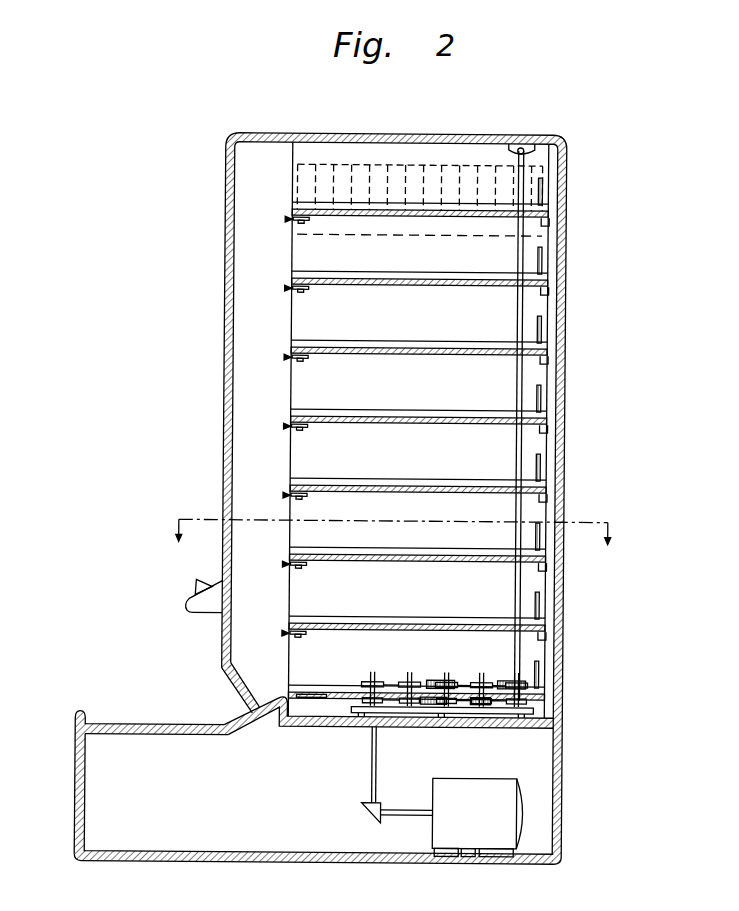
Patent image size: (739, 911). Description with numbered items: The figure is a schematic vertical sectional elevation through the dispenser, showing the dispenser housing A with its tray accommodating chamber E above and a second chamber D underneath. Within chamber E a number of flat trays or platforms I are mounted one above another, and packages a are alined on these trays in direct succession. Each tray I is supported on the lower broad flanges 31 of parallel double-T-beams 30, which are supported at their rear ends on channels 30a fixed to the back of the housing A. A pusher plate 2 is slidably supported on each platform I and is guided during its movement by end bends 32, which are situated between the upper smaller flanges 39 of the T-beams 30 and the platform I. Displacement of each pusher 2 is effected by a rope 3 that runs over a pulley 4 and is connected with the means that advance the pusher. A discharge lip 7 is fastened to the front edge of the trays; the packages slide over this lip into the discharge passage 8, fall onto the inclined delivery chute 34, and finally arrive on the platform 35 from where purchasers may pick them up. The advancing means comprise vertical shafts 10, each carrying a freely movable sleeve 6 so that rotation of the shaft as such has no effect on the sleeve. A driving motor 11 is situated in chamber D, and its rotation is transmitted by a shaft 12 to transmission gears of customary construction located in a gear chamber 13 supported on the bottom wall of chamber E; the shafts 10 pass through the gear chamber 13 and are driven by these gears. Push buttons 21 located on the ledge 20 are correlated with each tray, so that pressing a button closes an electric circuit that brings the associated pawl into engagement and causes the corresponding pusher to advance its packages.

The pusher plate 2 is at (542, 188).
The rope 3 is at (410, 706).
The pulley 4 is at (303, 291).
The sleeve 6 is at (372, 683).
The discharge lip 7 is at (290, 357).
The discharge passage 8 is at (264, 279).
The vertical shaft 10 is at (413, 677).
The driving motor 11 is at (473, 842).
The shaft 12 is at (379, 782).
The gear chamber 13 is at (420, 713).
The ledge 20 is at (203, 614).
The push button 21 is at (197, 594).
The double-T-beam 30 is at (396, 271).
The channel 30a is at (550, 226).
The lower broad flange 31 is at (409, 286).
The end bend 32 is at (533, 282).
The inclined delivery chute 34 is at (241, 722).
The platform 35 is at (162, 725).
The upper smaller flange 39 is at (464, 281).
The dispenser housing A is at (565, 343).
The second chamber D is at (540, 771).
The tray accommodating chamber E is at (536, 467).
The package a is at (446, 170).
The tray I is at (389, 542).